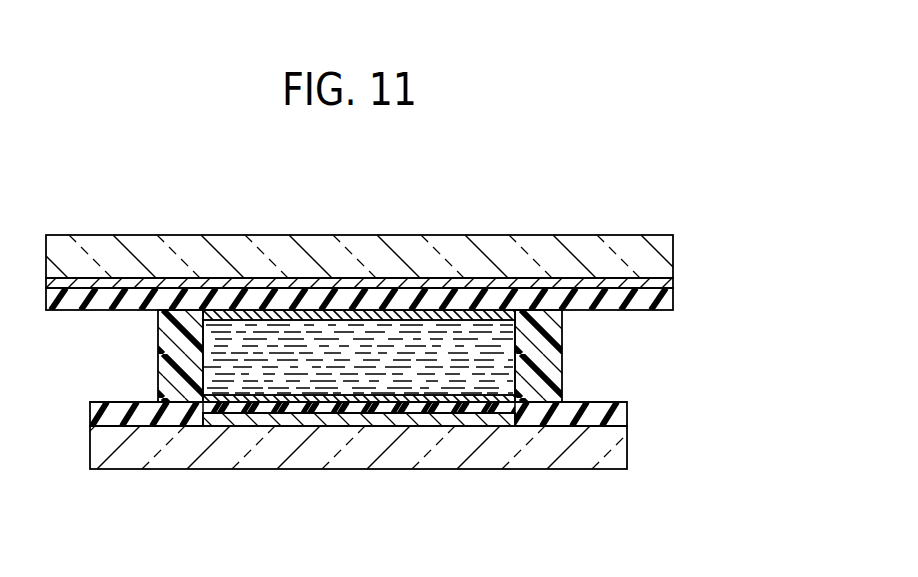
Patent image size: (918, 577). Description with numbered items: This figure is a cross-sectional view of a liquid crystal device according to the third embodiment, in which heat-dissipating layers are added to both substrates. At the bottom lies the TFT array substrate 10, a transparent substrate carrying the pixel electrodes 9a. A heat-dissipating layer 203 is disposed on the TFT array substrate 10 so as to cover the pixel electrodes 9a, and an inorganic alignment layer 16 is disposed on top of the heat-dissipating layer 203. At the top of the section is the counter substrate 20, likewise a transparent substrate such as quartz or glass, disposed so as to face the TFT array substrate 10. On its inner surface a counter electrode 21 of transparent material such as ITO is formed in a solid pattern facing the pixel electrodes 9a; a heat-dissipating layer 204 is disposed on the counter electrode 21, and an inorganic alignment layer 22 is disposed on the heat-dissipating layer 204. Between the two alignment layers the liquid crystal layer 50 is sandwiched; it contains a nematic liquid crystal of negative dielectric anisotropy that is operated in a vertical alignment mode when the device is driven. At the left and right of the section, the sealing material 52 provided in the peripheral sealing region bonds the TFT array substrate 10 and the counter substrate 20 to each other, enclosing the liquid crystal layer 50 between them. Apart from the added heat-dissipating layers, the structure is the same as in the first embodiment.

The counter substrate 20 is at (620, 242).
The counter electrode 21 is at (665, 285).
The heat-dissipating layer 204 is at (668, 302).
The inorganic alignment layer 22 is at (370, 317).
The liquid crystal layer 50 is at (512, 373).
The inorganic alignment layer 16 is at (450, 402).
The sealing material 52 is at (168, 350).
The heat-dissipating layer 203 is at (627, 407).
The pixel electrode 9a is at (373, 418).
The TFT array substrate 10 is at (623, 448).